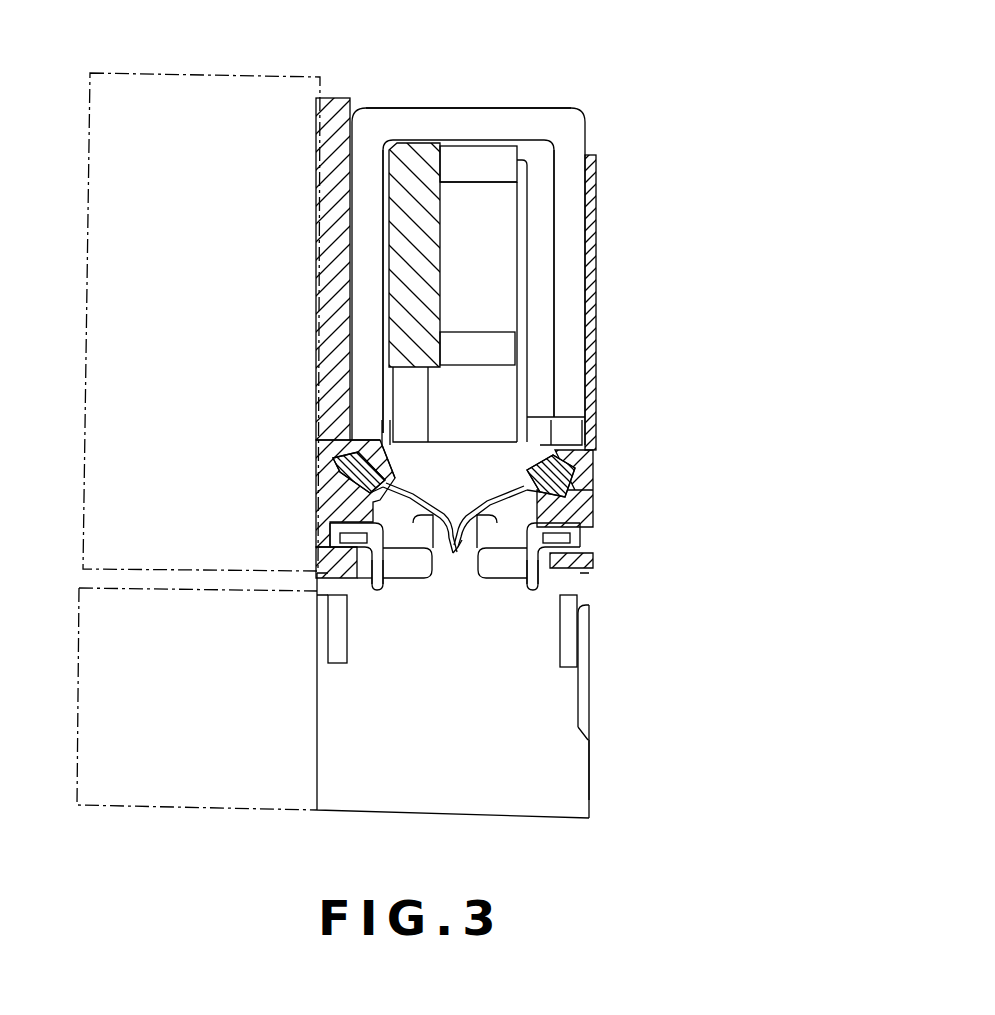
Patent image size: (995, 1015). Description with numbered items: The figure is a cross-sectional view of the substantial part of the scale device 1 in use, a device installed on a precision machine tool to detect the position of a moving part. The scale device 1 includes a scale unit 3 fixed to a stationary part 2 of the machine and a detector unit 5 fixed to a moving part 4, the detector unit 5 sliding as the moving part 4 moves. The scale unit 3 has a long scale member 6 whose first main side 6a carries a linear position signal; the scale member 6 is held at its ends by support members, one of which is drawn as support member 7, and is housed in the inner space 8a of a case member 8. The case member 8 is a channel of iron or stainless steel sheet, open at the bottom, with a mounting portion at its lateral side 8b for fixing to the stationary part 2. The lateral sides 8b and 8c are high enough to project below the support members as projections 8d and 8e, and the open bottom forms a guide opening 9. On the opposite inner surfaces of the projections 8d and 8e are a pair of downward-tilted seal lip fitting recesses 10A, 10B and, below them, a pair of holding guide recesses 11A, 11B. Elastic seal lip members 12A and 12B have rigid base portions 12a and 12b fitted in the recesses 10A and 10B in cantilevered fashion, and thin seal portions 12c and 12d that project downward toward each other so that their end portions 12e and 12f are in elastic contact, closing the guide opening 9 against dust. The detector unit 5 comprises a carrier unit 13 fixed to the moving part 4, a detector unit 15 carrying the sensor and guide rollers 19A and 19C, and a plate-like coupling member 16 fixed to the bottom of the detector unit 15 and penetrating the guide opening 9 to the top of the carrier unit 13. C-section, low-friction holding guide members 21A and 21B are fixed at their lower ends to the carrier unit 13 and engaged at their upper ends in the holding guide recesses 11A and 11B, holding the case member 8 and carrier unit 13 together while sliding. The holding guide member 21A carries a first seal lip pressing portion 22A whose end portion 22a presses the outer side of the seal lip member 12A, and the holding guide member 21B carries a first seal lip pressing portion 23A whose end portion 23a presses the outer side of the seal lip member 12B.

The scale device 1 is at (709, 115).
The stationary part 2 is at (208, 72).
The scale unit 3 is at (413, 152).
The moving part 4 is at (191, 786).
The detector unit 5 is at (598, 683).
The scale member 6 is at (418, 128).
The first main side 6a is at (445, 200).
The top wall of cover 7 is at (510, 118).
The case member 8 is at (600, 231).
The inner space 8a is at (538, 205).
The lateral side 8b is at (318, 308).
The lateral side 8c is at (596, 292).
The projection 8d is at (335, 490).
The projection 8e is at (595, 466).
The guide opening 9 is at (317, 591).
The seal lip fitting recess 10A is at (322, 460).
The seal lip fitting recess 10B is at (568, 490).
The holding guide recess 11A is at (322, 535).
The holding guide recess 11B is at (590, 550).
The seal lip member 12A is at (398, 518).
The seal lip member 12B is at (565, 512).
The base portion 12a is at (330, 470).
The base portion 12b is at (575, 478).
The seal portion 12c is at (385, 440).
The seal portion 12d is at (552, 436).
The end portion 12e is at (447, 535).
The end portion 12f is at (465, 535).
The carrier unit 13 is at (594, 746).
The detector unit 15 is at (540, 260).
The coupling member 16 is at (478, 447).
The guide roller 19A is at (505, 164).
The guide roller 19C is at (490, 345).
The holding guide member 21A is at (372, 574).
The holding guide member 21B is at (580, 588).
The first seal lip pressing portion 22A is at (417, 576).
The end portion 22a is at (437, 583).
The first seal lip pressing portion 23A is at (583, 576).
The end portion 23a is at (580, 613).